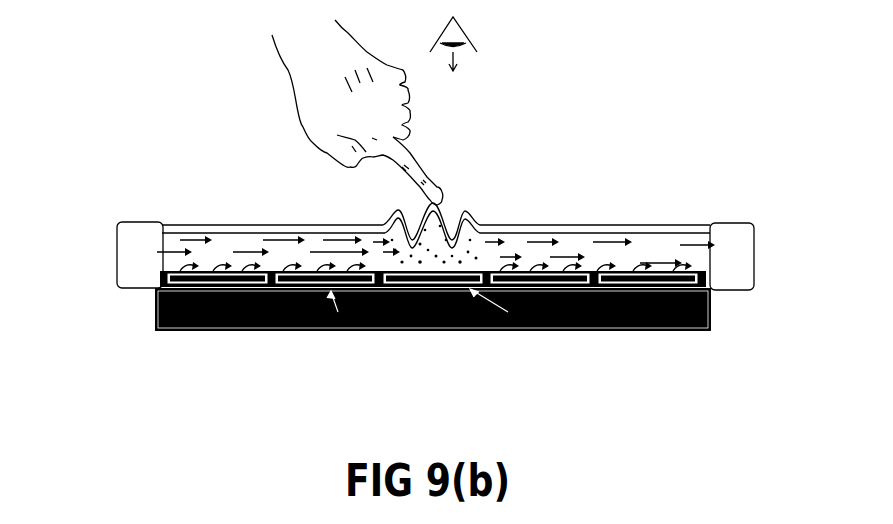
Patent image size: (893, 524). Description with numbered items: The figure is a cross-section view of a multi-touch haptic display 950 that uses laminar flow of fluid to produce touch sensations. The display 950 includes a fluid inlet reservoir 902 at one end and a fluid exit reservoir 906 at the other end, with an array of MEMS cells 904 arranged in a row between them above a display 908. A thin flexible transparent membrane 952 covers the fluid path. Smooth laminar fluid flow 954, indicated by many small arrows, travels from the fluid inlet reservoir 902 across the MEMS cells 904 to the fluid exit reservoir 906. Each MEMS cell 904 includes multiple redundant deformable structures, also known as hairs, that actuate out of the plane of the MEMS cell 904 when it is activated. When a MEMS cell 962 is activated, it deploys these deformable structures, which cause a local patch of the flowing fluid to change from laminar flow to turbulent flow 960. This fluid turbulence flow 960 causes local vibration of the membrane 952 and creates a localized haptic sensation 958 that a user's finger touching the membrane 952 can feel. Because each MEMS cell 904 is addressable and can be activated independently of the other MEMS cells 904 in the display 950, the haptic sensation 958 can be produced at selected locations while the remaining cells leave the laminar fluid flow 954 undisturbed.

The multi-touch haptic display 950 is at (112, 129).
The fluid inlet reservoir 902 is at (121, 223).
The array of MEMS cells 904 is at (158, 297).
The fluid exit reservoir 906 is at (743, 252).
The display 908 is at (674, 328).
The thin flexible transparent membrane 952 is at (690, 225).
The laminar fluid flow 954 is at (175, 232).
The localized haptic sensation 958 is at (442, 209).
The turbulent flow 960 is at (346, 290).
The activated MEMS cell 962 is at (470, 290).